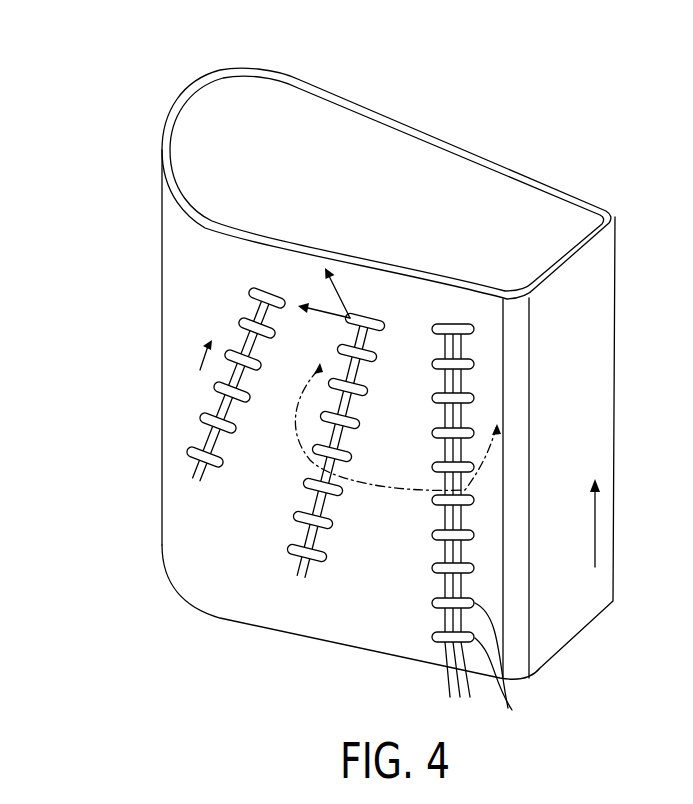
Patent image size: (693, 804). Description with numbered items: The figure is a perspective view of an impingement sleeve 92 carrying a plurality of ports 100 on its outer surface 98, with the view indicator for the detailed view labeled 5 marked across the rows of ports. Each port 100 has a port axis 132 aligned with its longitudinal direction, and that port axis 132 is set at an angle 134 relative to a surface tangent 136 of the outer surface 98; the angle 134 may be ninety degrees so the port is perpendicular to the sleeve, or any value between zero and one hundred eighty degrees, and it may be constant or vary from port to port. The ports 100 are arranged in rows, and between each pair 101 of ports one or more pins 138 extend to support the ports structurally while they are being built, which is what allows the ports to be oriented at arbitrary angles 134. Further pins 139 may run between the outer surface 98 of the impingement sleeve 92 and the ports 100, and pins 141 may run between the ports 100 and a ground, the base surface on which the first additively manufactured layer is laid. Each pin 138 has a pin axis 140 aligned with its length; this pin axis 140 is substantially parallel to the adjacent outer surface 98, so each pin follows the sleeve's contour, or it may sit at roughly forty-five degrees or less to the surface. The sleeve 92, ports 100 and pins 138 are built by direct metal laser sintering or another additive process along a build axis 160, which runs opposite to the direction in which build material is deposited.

The impingement sleeve 92 is at (512, 108).
The outer surface 98 is at (175, 220).
The plurality of ports 100 is at (476, 500).
The pair of ports 101 is at (252, 292).
The port axis 132 is at (334, 310).
The angle 134 is at (338, 296).
The surface tangent 136 is at (350, 317).
The pin 138 is at (208, 402).
The pin 139 is at (194, 473).
The pin axis 140 is at (197, 360).
The pin 141 is at (447, 674).
The build axis 160 is at (597, 508).
The section line for FIG. 5 is at (398, 413).